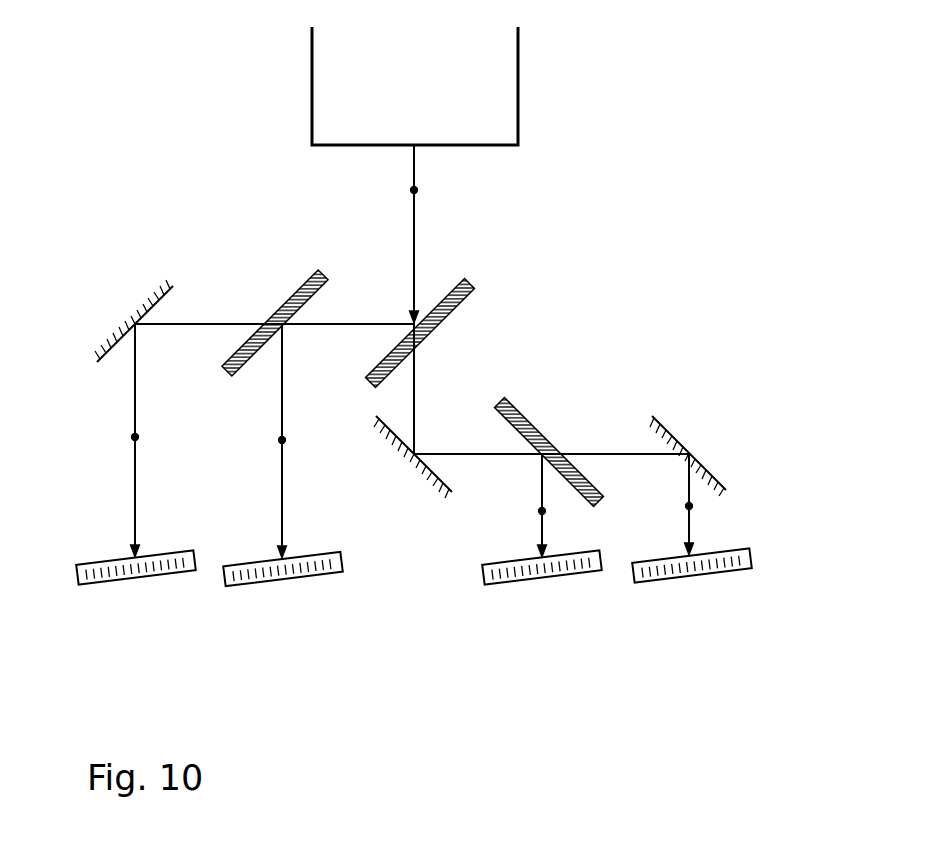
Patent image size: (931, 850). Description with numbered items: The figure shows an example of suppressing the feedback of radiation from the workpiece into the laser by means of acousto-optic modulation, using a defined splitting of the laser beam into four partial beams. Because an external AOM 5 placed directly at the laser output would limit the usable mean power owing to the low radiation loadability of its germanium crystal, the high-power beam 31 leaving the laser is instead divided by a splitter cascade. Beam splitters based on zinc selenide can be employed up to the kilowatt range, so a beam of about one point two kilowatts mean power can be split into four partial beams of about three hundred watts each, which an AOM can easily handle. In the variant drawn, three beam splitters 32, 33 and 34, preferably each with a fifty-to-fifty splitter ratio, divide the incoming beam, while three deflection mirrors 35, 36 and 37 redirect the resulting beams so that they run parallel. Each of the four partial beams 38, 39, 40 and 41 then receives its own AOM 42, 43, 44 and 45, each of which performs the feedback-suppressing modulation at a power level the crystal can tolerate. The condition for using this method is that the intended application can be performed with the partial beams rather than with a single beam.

The light beam 31 is at (418, 190).
The beam splitter 32 is at (466, 284).
The beam splitter 33 is at (320, 272).
The beam splitter 34 is at (527, 413).
The deflection mirror 35 is at (130, 312).
The deflection mirror 36 is at (387, 435).
The deflection mirror 37 is at (695, 447).
The partial beam 38 is at (135, 437).
The partial beam 39 is at (282, 440).
The partial beam 40 is at (542, 511).
The partial beam 41 is at (689, 506).
The AOM 42 is at (125, 585).
The AOM 43 is at (267, 585).
The AOM 44 is at (533, 583).
The AOM 45 is at (680, 582).
The third AOM 5 is at (752, 550).